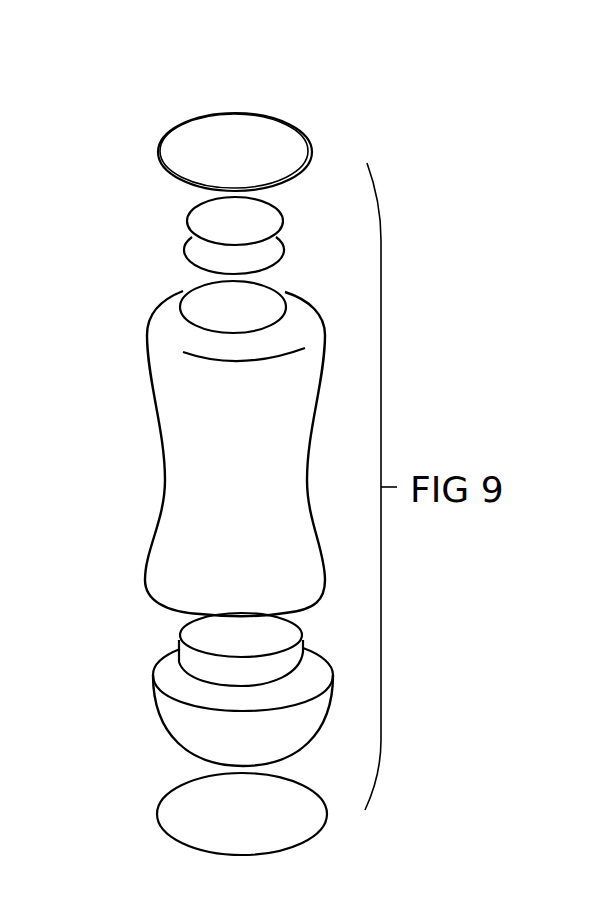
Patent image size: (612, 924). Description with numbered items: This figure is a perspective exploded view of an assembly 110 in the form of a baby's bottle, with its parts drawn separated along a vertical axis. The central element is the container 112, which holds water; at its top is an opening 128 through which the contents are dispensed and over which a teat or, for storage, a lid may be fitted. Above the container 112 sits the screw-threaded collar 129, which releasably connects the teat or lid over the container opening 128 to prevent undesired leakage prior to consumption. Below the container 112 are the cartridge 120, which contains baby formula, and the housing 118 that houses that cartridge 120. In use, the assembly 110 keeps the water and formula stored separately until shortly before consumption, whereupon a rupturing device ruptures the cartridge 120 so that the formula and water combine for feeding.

The assembly 110 is at (342, 95).
The container 112 is at (190, 466).
The housing 118 is at (187, 723).
The cartridge 120 is at (218, 630).
The opening 128 is at (212, 308).
The screw-threaded collar 129 is at (200, 117).